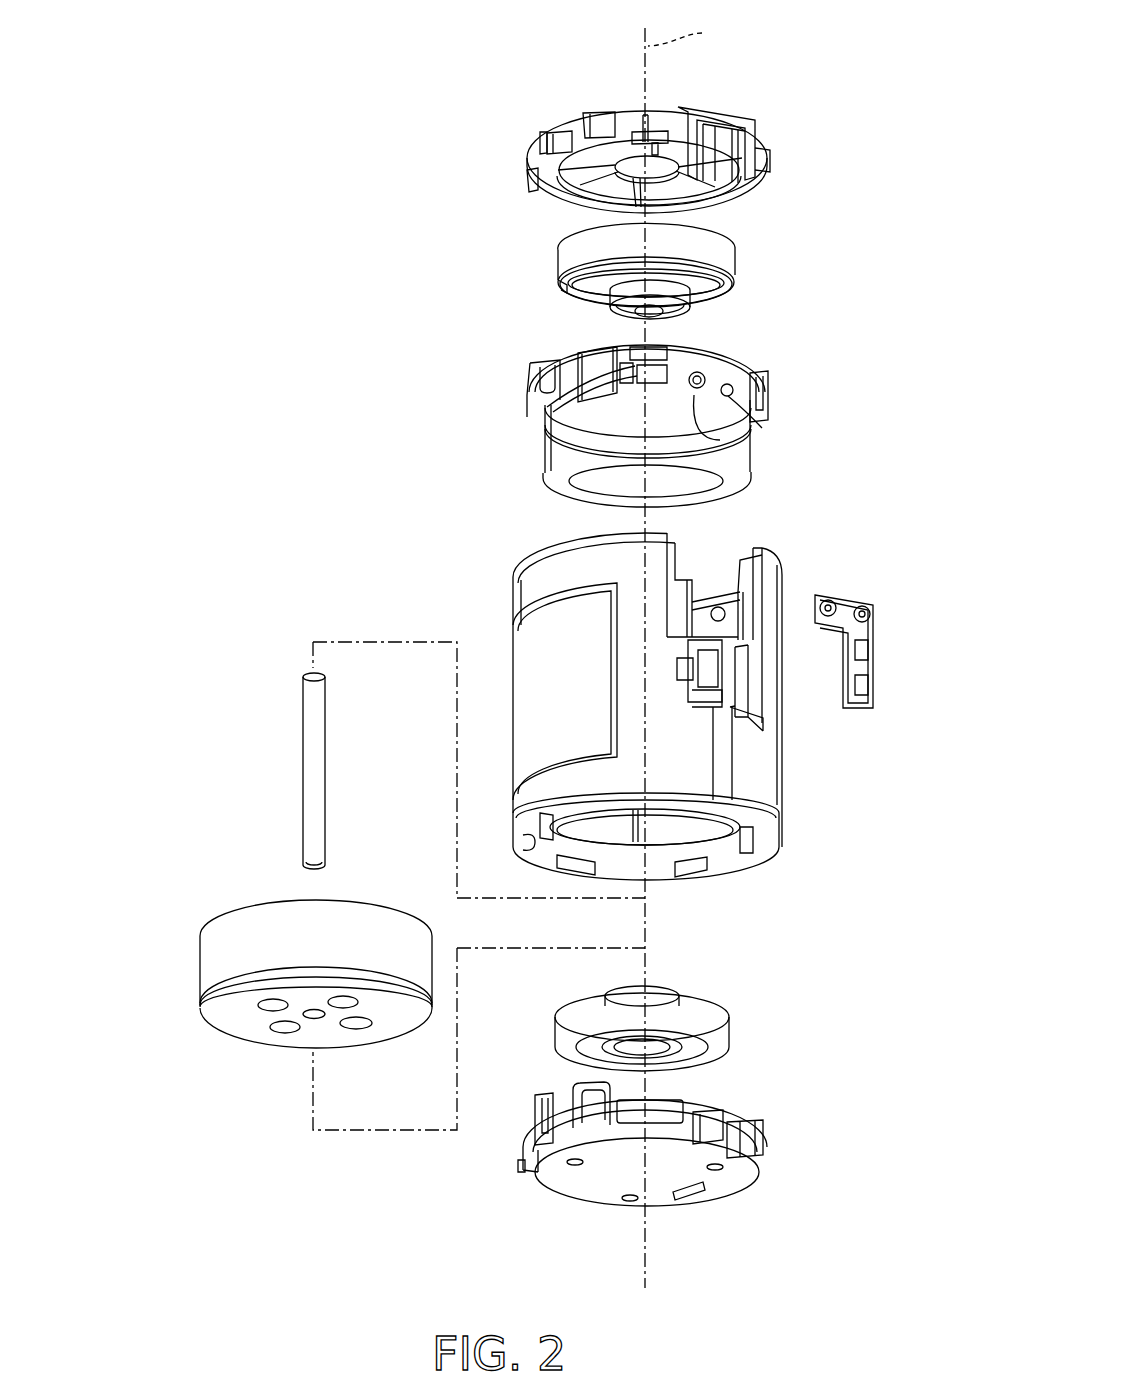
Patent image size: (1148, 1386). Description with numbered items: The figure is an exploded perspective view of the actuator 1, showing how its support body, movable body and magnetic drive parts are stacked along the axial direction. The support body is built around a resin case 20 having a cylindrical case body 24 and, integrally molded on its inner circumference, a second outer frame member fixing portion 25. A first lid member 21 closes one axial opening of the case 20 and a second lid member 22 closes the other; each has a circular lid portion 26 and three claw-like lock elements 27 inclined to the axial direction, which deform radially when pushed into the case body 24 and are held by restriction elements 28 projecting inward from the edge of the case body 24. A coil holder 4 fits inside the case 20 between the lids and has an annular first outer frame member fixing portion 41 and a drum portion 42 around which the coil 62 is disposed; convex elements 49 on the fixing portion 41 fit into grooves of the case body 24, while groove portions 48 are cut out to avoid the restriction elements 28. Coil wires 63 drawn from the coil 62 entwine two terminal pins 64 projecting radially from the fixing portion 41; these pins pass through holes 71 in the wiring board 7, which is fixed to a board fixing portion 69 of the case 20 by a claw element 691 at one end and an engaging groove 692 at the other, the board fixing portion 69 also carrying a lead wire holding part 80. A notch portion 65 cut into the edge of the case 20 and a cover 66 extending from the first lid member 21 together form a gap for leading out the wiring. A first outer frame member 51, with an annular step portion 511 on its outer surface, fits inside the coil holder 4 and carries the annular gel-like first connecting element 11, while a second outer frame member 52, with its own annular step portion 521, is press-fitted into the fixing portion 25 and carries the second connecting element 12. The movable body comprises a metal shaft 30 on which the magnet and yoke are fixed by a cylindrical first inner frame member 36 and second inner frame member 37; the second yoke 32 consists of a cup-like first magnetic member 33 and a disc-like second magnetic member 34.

The actuator 1 is at (278, 113).
The first lid member 21 is at (775, 92).
The cover 66 is at (770, 150).
The lid portion 26 is at (585, 130).
The lock element 27 is at (598, 125).
The first outer frame member 51 is at (745, 268).
The annular step portion 511 is at (738, 290).
The first connecting element 11 is at (692, 284).
The first inner frame member 36 is at (613, 292).
The coil holder 4 is at (785, 408).
The convex elements 49 is at (645, 352).
The groove portions 48 is at (598, 373).
The terminal pins 64 is at (704, 376).
The coil wires 63 is at (752, 430).
The first outer frame member fixing portion 41 is at (545, 440).
The coil 62 is at (550, 447).
The drum portion 42 is at (740, 485).
The case 20 is at (790, 798).
The case body 24 is at (770, 780).
The notch portion 65 is at (742, 560).
The claw element 691 is at (718, 606).
The lead wire holding part 80 is at (703, 690).
The board fixing portion 69 is at (765, 663).
The engaging groove 692 is at (752, 714).
The second outer frame member fixing portion 25 is at (707, 823).
The restriction element 28 is at (527, 858).
The wiring board 7 is at (882, 640).
The holes 71 is at (860, 612).
The shaft 30 is at (303, 745).
The second yoke 32 is at (143, 1023).
The first magnetic member 33 is at (202, 953).
The second magnetic member 34 is at (228, 1005).
The second outer frame member 52 is at (740, 1018).
The second inner frame member 37 is at (662, 985).
The annular step portion 521 is at (690, 992).
The second connecting element 12 is at (700, 1052).
The second lid member 22 is at (780, 1158).